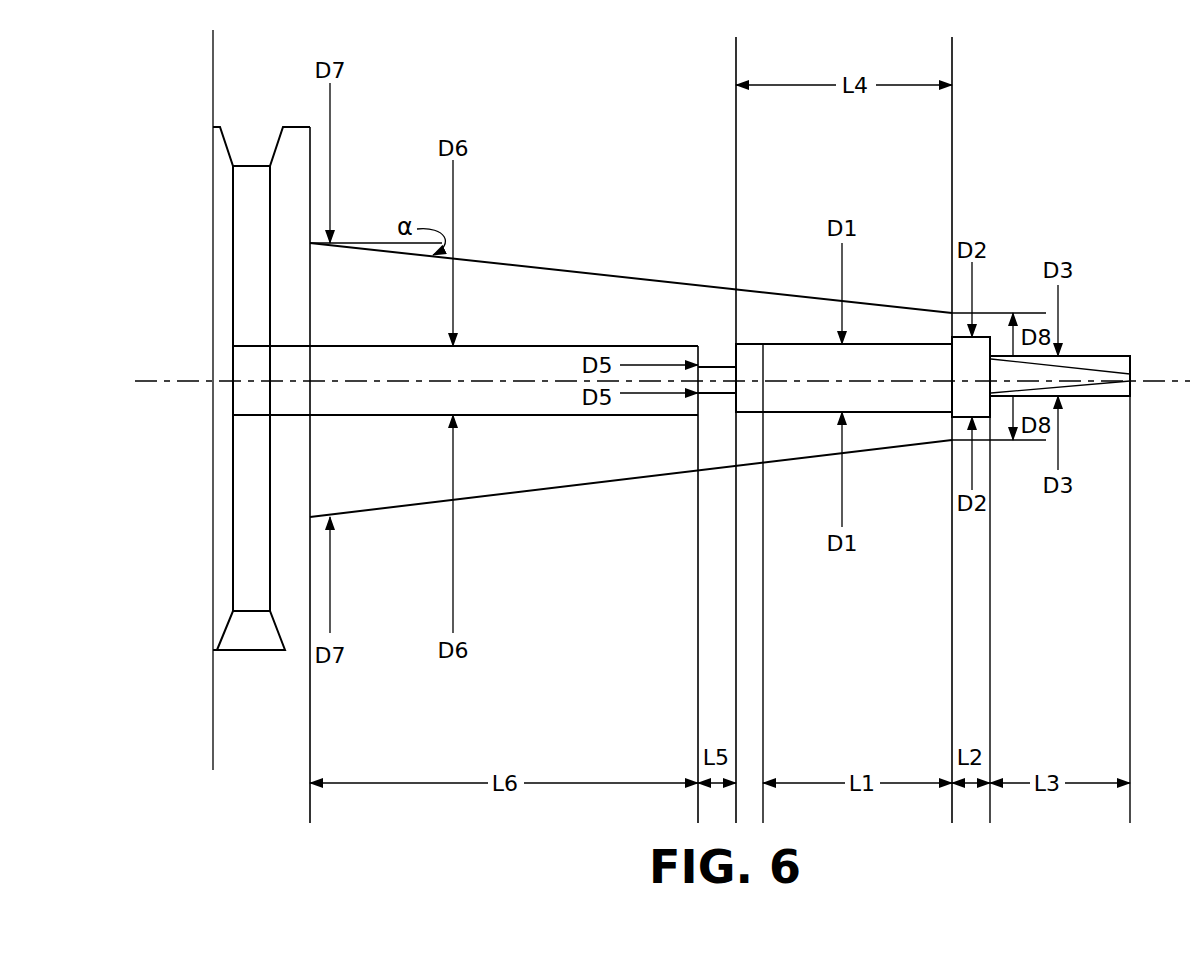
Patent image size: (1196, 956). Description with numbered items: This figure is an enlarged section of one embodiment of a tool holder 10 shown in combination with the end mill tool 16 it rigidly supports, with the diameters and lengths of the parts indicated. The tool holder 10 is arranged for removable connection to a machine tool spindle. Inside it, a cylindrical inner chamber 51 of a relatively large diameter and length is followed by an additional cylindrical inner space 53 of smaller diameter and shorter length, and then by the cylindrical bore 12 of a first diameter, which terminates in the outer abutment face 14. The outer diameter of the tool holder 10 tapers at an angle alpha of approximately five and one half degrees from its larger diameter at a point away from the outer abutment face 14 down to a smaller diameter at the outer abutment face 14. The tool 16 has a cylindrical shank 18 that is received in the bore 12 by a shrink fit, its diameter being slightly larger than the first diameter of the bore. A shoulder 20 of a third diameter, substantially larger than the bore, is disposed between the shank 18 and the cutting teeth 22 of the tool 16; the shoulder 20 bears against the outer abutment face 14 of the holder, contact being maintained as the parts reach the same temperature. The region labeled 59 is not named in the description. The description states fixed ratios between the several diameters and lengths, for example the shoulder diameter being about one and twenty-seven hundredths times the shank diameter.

The tool holder 10 is at (258, 155).
The cylindrical inner chamber 51 is at (530, 365).
The additional cylindrical inner space 53 is at (717, 365).
The shoulder portion 59 is at (752, 344).
The cylindrical bore 12 is at (818, 344).
The outer abutment face 14 is at (958, 325).
The cylindrical shank 18 is at (838, 396).
The shoulder 20 is at (972, 400).
The end mill tool 16 is at (1100, 356).
The cutting teeth 22 is at (1098, 396).